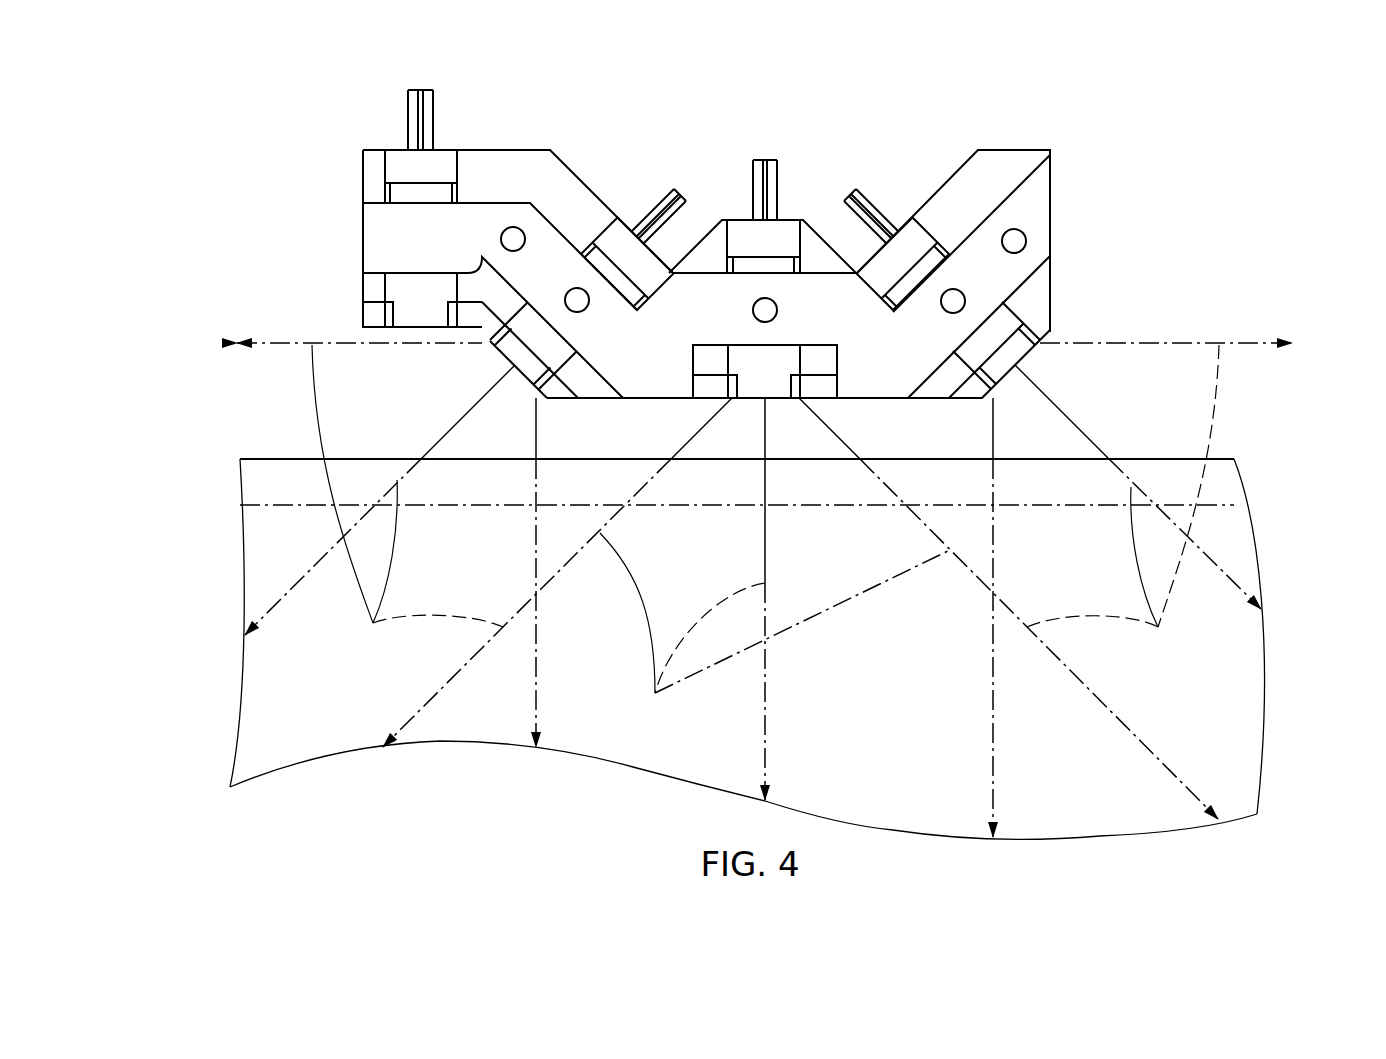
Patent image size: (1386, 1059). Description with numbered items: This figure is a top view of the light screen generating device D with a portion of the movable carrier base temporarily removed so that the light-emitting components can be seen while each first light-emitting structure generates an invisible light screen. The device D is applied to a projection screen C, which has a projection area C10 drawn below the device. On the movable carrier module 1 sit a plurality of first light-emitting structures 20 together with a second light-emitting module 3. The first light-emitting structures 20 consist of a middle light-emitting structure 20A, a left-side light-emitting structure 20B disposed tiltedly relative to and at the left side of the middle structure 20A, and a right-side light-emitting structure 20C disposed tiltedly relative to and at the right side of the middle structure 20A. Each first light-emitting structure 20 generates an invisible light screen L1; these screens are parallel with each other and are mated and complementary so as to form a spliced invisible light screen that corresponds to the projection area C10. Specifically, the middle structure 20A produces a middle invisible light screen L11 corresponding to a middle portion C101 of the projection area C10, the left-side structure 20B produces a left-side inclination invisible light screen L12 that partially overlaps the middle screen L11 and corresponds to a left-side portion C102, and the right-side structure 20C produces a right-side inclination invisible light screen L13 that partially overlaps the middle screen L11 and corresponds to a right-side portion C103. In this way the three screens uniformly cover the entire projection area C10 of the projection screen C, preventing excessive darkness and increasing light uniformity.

The movable carrier module 1 is at (1013, 146).
The second light-emitting module 3 is at (398, 166).
The light screen generating device D is at (706, 207).
The first light-emitting structures 20 is at (643, 72).
The middle light-emitting structure 20A is at (748, 266).
The left-side light-emitting structure 20B is at (600, 262).
The right-side light-emitting structure 20C is at (930, 262).
The projection screen C is at (1236, 452).
The projection area C10 is at (1238, 503).
The middle portion C101 is at (893, 793).
The left-side portion C102 is at (285, 693).
The right-side portion C103 is at (1232, 728).
The invisible light screen L1 is at (1325, 97).
The middle invisible light screen L11 is at (800, 608).
The left-side inclination invisible light screen L12 is at (390, 546).
The right-side inclination invisible light screen L13 is at (1127, 591).